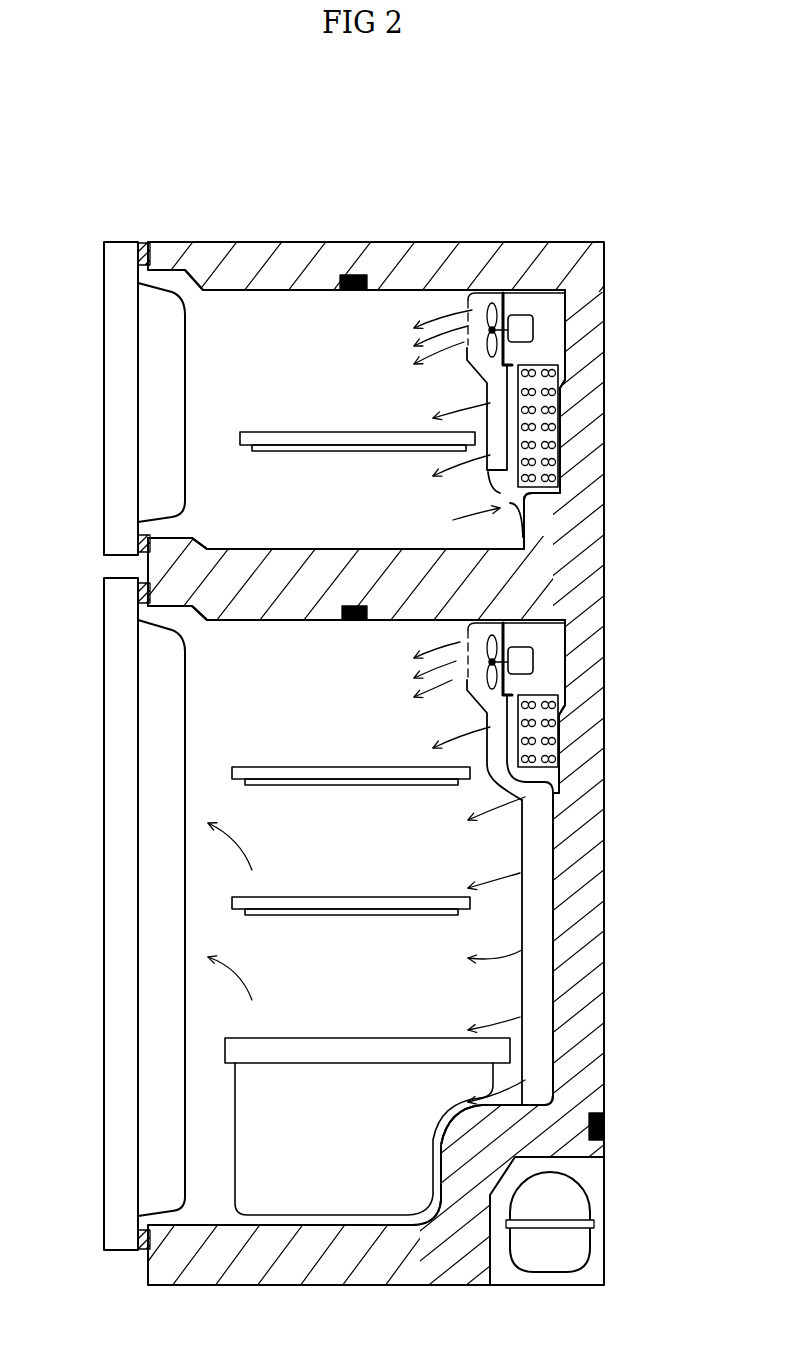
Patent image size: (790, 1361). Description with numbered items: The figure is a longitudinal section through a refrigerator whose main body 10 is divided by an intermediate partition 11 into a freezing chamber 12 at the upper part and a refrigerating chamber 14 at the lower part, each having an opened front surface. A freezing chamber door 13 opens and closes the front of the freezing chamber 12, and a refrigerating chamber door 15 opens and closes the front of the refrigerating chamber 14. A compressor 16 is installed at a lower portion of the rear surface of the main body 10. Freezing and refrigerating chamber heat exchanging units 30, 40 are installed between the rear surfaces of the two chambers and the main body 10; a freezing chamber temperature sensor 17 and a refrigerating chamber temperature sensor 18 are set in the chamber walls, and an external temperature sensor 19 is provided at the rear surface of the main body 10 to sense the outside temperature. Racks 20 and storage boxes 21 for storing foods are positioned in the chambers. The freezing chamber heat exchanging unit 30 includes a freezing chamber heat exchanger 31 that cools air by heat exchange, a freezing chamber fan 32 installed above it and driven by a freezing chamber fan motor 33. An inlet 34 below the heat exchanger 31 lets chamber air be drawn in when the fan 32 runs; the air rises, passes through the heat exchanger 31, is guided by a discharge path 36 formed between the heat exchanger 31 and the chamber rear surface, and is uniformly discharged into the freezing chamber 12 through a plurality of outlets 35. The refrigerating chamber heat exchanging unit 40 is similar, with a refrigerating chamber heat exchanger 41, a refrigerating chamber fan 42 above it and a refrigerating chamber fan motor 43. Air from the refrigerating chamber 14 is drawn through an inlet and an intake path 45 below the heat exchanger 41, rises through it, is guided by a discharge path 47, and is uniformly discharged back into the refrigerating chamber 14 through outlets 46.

The main body 10 is at (241, 242).
The intermediate partition 11 is at (344, 570).
The freezing chamber 12 is at (344, 373).
The freezing chamber door 13 is at (113, 392).
The refrigerating chamber 14 is at (344, 845).
The refrigerating chamber door 15 is at (113, 845).
The compressor 16 is at (568, 1205).
The freezing chamber temperature sensor 17 is at (355, 276).
The refrigerating chamber temperature sensor 18 is at (355, 622).
The external temperature sensor 19 is at (605, 1125).
The racks 20 is at (272, 448).
The storage boxes 21 is at (298, 1040).
The freezing chamber heat exchanging unit 30 is at (550, 362).
The freezing chamber heat exchanger 31 is at (528, 412).
The freezing chamber fan 32 is at (557, 294).
The freezing chamber fan motor 33 is at (533, 327).
The inlet 34 is at (498, 493).
The outlets 35 is at (488, 397).
The discharge path 36 is at (482, 312).
The refrigerating chamber heat exchanging unit 40 is at (550, 692).
The refrigerating chamber heat exchanger 41 is at (528, 743).
The refrigerating chamber fan 42 is at (557, 625).
The refrigerating chamber fan motor 43 is at (533, 658).
The intake path 45 is at (504, 767).
The outlets 46 is at (520, 942).
The discharge path 47 is at (539, 829).